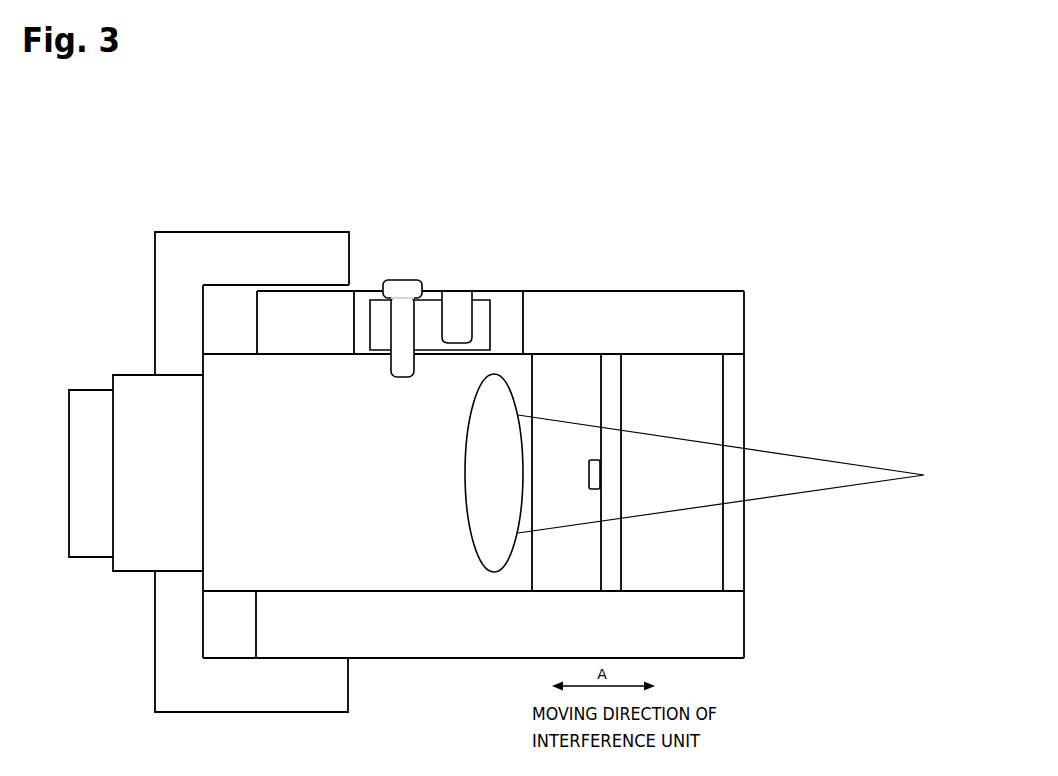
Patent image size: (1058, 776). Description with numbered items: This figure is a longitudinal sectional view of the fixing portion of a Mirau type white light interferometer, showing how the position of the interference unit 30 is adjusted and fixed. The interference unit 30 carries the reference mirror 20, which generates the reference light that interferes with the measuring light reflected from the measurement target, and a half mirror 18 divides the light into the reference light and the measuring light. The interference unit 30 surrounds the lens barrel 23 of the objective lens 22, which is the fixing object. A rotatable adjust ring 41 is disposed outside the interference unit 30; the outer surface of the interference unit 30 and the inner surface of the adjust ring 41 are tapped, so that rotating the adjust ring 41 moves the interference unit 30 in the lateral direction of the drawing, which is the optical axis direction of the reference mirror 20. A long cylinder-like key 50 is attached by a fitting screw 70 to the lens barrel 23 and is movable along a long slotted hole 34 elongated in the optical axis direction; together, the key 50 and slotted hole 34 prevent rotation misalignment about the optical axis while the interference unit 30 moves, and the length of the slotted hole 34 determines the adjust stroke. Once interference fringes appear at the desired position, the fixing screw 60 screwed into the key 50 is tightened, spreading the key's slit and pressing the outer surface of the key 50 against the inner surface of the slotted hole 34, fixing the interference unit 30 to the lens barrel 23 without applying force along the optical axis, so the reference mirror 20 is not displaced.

The half mirror 18 is at (745, 559).
The reference mirror 20 is at (589, 475).
The objective lens 22 is at (466, 508).
The lens barrel 23 is at (252, 412).
The interference unit 30 is at (452, 660).
The long slotted hole 34 is at (502, 290).
The adjust ring 41 is at (277, 258).
The key 50 is at (379, 314).
The fixing screw 60 is at (458, 303).
The fitting screw 70 is at (403, 278).